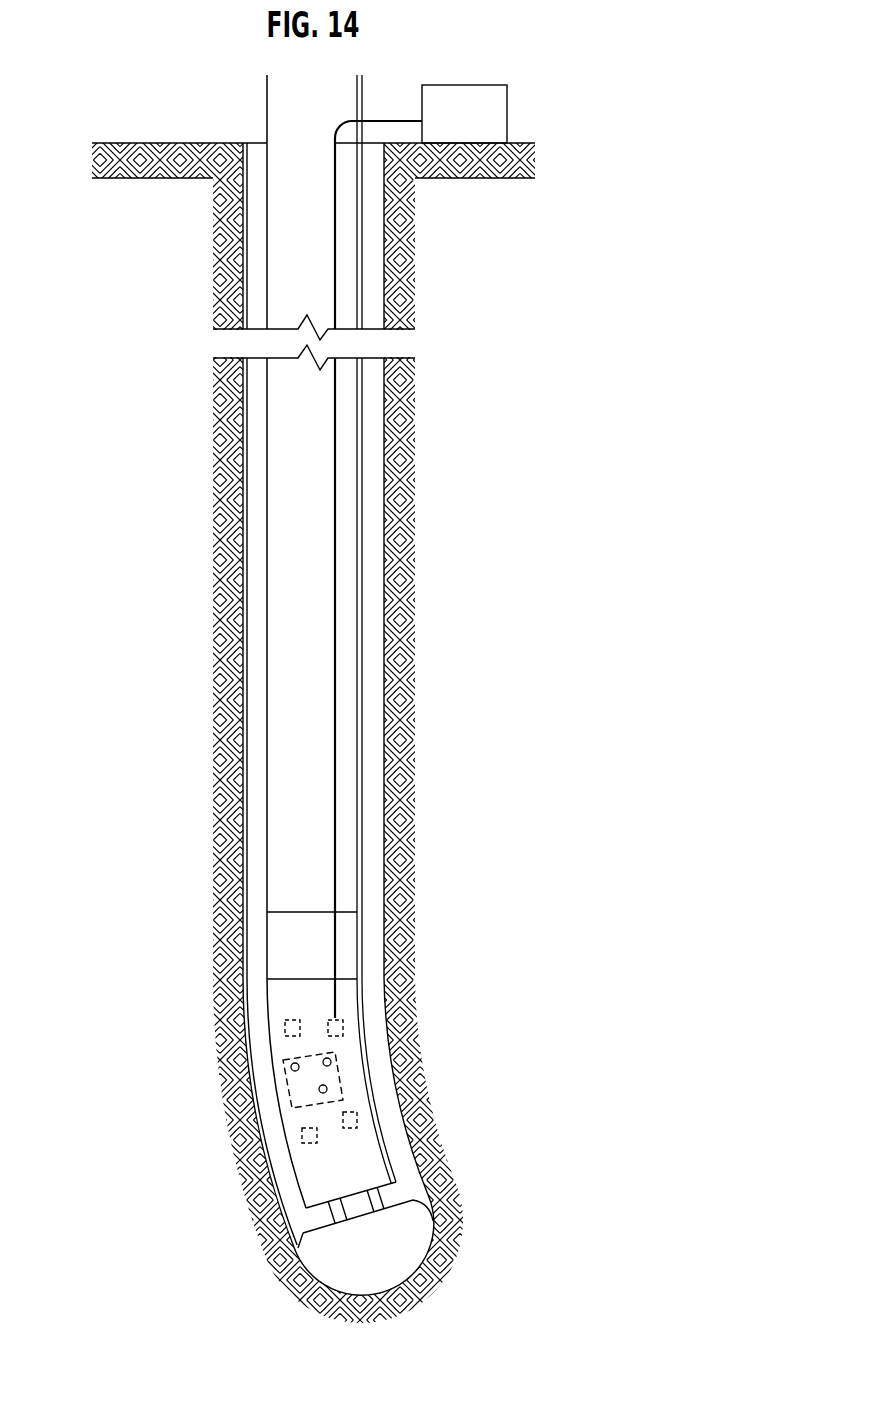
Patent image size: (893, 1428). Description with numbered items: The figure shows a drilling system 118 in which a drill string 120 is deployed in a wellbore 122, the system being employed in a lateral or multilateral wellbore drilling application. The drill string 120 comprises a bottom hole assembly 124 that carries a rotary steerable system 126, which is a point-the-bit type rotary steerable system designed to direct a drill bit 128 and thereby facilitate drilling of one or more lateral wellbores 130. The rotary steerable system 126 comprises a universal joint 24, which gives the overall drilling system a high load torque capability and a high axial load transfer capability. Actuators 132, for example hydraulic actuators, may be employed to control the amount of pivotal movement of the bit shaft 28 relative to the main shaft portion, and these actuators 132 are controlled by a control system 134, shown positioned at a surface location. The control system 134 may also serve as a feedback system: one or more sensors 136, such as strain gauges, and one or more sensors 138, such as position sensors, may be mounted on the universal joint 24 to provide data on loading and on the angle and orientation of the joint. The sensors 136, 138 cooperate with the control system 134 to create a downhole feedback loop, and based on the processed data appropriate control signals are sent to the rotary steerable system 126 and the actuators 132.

The drilling system 118 is at (241, 120).
The drill string 120 is at (366, 549).
The wellbore 122 is at (258, 286).
The bottom hole assembly 124 is at (263, 939).
The rotary steerable system 126 is at (262, 1120).
The drill bit 128 is at (354, 1262).
The lateral wellbores 130 is at (438, 1191).
The actuators 132 is at (285, 1027).
The control system 134 is at (447, 126).
The sensors 136 is at (275, 1086).
The sensors 138 is at (327, 1088).
The universal joint 24 is at (350, 1056).
The bit shaft 28 is at (300, 1235).